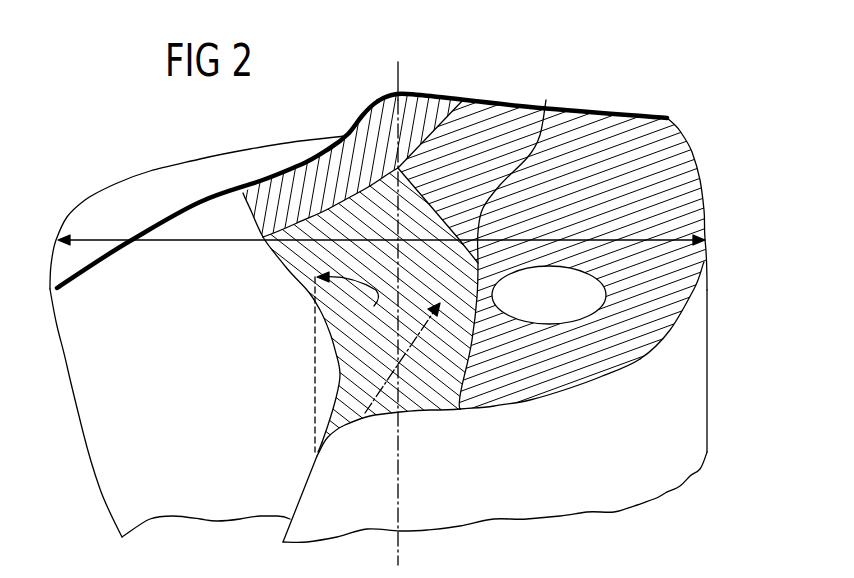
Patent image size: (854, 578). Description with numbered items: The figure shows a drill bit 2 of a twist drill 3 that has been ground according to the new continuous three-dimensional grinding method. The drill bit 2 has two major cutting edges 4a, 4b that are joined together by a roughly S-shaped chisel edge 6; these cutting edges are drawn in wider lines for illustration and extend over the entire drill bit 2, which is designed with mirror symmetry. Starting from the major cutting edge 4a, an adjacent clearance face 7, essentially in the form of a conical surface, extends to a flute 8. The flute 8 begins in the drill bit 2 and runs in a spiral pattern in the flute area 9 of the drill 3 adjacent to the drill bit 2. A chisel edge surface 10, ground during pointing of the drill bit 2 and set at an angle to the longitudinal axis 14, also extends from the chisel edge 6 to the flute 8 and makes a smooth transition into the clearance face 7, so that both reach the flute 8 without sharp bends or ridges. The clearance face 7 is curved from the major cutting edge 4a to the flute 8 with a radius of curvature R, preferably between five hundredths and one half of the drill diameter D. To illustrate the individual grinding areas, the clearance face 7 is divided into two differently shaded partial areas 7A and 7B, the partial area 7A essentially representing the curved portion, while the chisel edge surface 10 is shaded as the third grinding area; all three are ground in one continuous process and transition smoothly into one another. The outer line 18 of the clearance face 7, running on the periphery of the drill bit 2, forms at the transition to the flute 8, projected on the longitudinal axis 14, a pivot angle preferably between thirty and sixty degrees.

The drill bit 2 is at (709, 344).
The twist drill 3 is at (732, 438).
The major cutting edge 4a is at (574, 113).
The major cutting edge 4b is at (150, 226).
The chisel edge 6 is at (416, 92).
The clearance face 7 is at (660, 190).
The partial area 7A is at (293, 257).
The partial area 7B is at (660, 156).
The flute 8 is at (128, 422).
The flute area 9 is at (650, 474).
The chisel edge surface 10 is at (323, 162).
The longitudinal axis 14 is at (392, 84).
The outer line 18 is at (673, 332).
The drill diameter D is at (546, 100).
The radius of curvature R is at (373, 419).